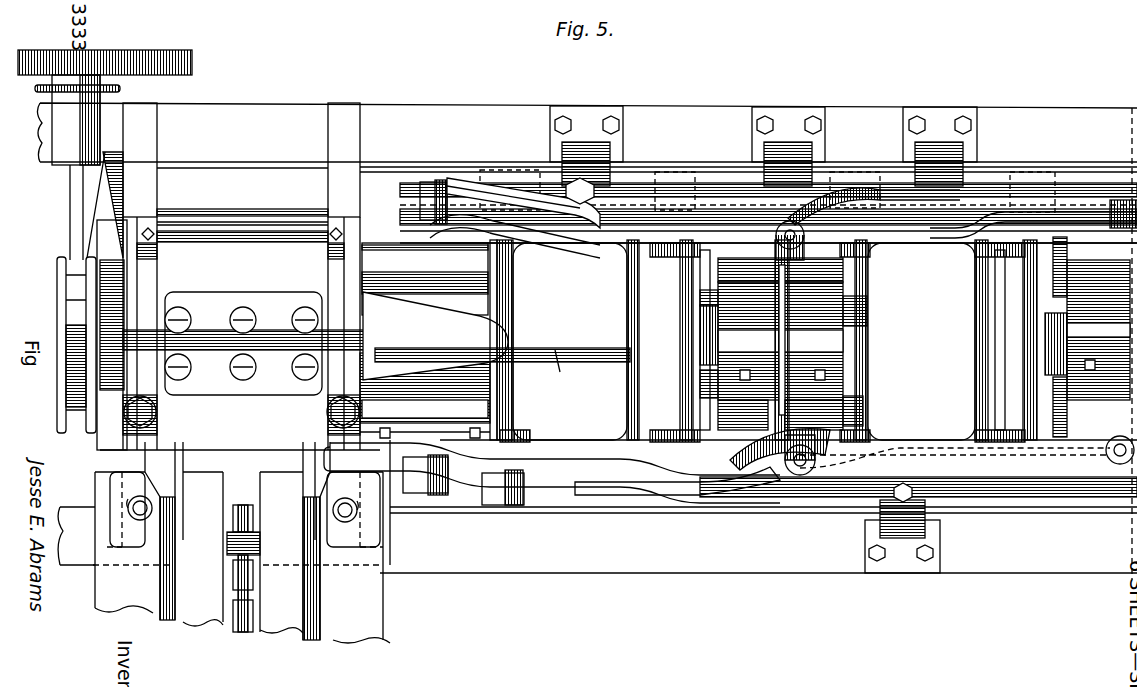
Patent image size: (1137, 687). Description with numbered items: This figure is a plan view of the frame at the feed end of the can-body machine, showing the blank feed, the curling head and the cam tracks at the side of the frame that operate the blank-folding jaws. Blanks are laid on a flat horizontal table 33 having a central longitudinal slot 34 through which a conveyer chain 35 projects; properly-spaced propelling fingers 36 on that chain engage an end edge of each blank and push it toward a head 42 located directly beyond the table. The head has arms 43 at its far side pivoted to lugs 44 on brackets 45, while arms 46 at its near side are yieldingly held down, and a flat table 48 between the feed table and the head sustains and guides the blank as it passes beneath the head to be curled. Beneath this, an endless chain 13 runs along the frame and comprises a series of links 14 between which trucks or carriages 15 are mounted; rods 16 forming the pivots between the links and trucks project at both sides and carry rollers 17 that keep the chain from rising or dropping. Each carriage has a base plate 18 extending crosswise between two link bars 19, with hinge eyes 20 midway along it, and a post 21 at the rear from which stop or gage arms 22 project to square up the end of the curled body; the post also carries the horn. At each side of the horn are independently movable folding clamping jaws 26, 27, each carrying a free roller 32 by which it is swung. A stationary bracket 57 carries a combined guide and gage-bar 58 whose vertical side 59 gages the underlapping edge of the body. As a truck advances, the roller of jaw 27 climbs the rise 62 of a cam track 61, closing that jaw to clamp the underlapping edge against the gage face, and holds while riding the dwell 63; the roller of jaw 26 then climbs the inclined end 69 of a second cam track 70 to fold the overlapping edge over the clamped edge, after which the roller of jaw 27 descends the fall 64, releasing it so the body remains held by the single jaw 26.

The endless chain 13 is at (612, 306).
The links 14 is at (632, 447).
The trucks or carriages 15 is at (848, 410).
The rods 16 is at (680, 320).
The rollers 17 is at (510, 494).
The base plate 18 is at (780, 415).
The link bars 19 is at (830, 212).
The hinge eyes 20 is at (865, 332).
The post 21 is at (698, 332).
The stop or gage arms 22 is at (705, 378).
The folding clamping jaw 26 is at (425, 395).
The folding clamping jaw 27 is at (425, 279).
The free roller 32 is at (420, 200).
The flat horizontal table 33 is at (224, 552).
The central longitudinal slot 34 is at (232, 625).
The conveyer chain 35 is at (252, 605).
The propelling fingers 36 is at (227, 540).
The head 42 is at (215, 296).
The arms 43 is at (130, 278).
The lugs 44 is at (150, 222).
The brackets 45 is at (340, 185).
The arms 46 is at (130, 400).
The flat table 48 is at (224, 536).
The stationary bracket 57 is at (435, 336).
The combined guide and gage-bar 58 is at (565, 372).
The vertical side of gage-bar 59 is at (568, 350).
The cam track 61 is at (640, 192).
The rise 62 is at (470, 190).
The dwell 63 is at (645, 220).
The fall 64 is at (868, 195).
The inclined end 69 is at (617, 488).
The cam track 70 is at (905, 455).